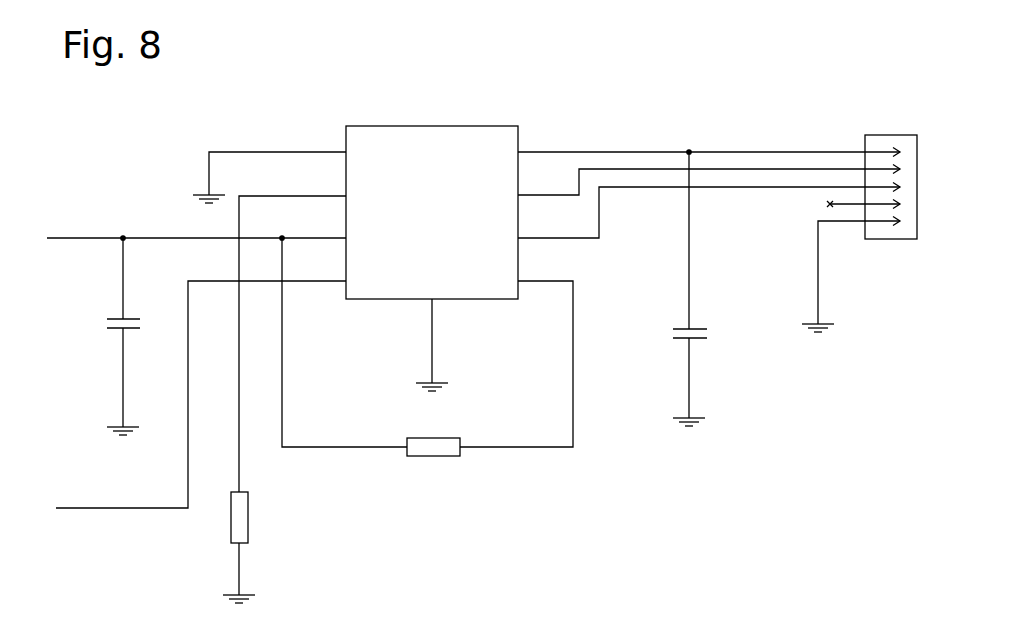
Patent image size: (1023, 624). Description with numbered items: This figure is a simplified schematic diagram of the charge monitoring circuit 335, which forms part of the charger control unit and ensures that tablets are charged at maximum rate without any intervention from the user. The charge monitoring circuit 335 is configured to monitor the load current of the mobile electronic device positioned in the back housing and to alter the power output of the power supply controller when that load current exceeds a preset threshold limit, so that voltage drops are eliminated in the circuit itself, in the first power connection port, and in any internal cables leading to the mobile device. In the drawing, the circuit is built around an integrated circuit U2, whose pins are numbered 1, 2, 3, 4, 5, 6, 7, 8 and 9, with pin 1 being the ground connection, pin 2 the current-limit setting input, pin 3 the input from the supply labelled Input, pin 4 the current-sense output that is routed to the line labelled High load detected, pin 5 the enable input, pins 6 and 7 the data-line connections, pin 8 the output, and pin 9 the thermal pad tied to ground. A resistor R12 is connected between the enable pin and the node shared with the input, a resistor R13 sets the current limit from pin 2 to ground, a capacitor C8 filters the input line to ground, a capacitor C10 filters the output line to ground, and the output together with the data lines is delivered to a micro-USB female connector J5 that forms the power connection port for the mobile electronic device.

The charge monitoring circuit 335 is at (507, 343).
The USB charging port controller TPS2511DGN U2 is at (431, 202).
The resistor 10k R12 is at (433, 432).
The resistor 22k R13 is at (266, 547).
The capacitor 100nF C8 is at (111, 336).
The capacitor 22uF C10 is at (680, 289).
The MicroUSB female connector J5 is at (881, 208).
The GND pin 1 is at (269, 171).
The ILIM_SET pin 2 is at (292, 337).
The IN pin 3 is at (196, 232).
The _CS pin 4 is at (201, 388).
The EN pin 5 is at (427, 342).
The DP pin 6 is at (709, 211).
The DM pin 7 is at (709, 180).
The OUT pin 8 is at (709, 147).
The PAD pin 9 is at (432, 345).